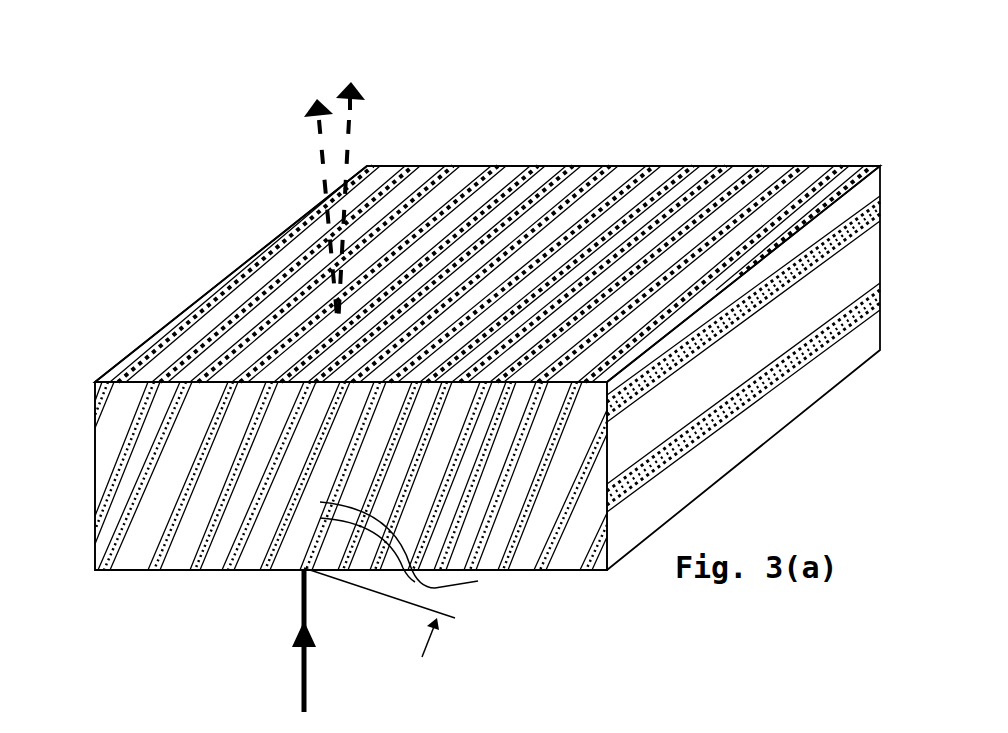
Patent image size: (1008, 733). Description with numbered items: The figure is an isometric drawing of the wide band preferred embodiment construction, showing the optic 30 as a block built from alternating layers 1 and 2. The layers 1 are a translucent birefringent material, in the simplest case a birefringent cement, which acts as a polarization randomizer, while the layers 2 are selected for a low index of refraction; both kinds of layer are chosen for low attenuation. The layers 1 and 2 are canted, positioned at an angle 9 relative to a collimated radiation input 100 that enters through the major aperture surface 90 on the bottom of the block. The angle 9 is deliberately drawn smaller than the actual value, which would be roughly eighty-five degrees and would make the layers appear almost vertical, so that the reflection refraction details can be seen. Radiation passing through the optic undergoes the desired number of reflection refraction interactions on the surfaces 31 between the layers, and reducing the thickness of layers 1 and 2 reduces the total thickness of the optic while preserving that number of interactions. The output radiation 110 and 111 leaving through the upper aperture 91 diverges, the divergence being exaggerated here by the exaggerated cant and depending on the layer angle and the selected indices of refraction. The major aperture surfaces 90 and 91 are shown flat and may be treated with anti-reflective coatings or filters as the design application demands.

The layer 1 is at (479, 380).
The layer 2 is at (489, 380).
The angle 9 is at (310, 697).
The optic 30 is at (78, 460).
The surfaces 31 is at (416, 548).
The optic aperture 90 is at (212, 570).
The aperture 91 is at (270, 271).
The collimated radiation input 100 is at (302, 660).
The output radiation 110 is at (321, 147).
The output radiation 111 is at (353, 112).